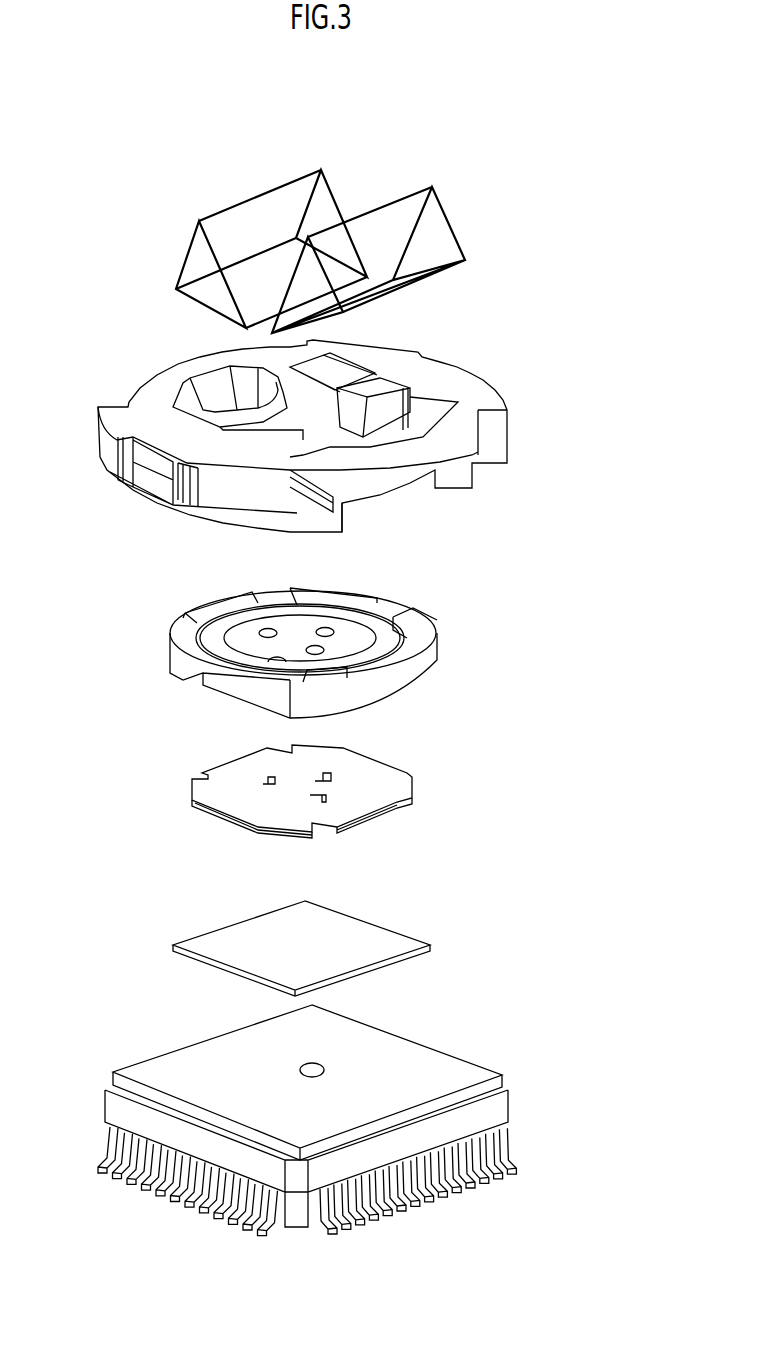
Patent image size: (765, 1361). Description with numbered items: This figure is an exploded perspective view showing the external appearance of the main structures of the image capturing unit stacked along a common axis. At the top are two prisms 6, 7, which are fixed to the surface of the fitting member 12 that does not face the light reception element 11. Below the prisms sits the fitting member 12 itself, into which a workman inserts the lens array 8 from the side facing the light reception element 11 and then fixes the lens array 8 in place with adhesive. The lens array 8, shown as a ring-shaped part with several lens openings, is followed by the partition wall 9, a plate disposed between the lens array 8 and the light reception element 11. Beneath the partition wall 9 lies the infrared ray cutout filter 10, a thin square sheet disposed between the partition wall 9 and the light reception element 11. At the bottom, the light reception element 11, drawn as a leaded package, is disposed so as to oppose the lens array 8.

The prism 6 is at (248, 216).
The prism 7 is at (437, 238).
The fitting member 12 is at (422, 368).
The lens array 8 is at (420, 628).
The partition wall 9 is at (378, 772).
The infrared ray cutout filter 10 is at (377, 940).
The light reception element 11 is at (378, 1052).